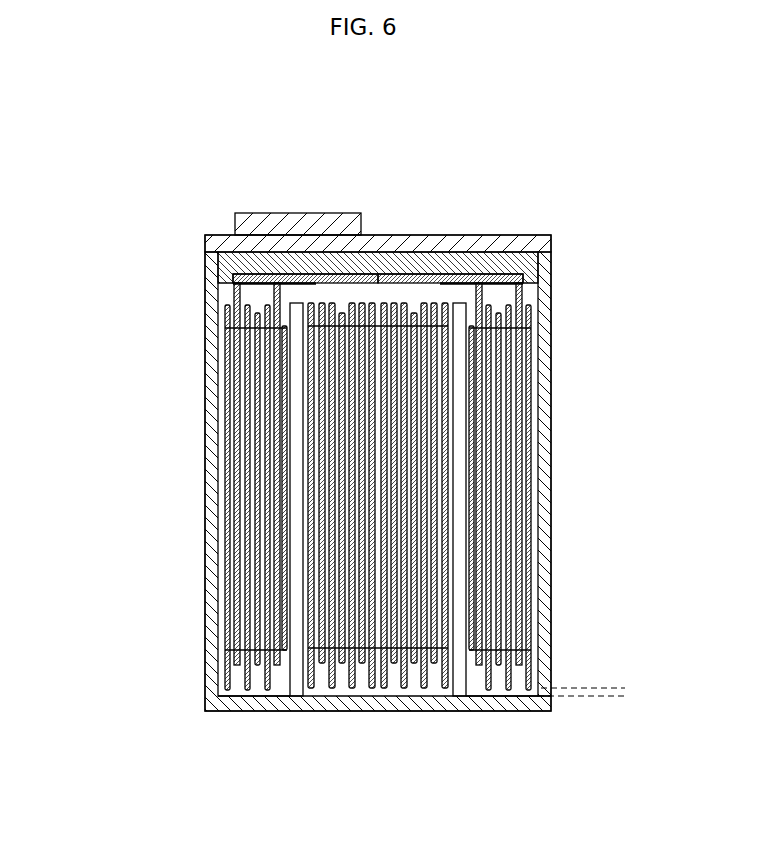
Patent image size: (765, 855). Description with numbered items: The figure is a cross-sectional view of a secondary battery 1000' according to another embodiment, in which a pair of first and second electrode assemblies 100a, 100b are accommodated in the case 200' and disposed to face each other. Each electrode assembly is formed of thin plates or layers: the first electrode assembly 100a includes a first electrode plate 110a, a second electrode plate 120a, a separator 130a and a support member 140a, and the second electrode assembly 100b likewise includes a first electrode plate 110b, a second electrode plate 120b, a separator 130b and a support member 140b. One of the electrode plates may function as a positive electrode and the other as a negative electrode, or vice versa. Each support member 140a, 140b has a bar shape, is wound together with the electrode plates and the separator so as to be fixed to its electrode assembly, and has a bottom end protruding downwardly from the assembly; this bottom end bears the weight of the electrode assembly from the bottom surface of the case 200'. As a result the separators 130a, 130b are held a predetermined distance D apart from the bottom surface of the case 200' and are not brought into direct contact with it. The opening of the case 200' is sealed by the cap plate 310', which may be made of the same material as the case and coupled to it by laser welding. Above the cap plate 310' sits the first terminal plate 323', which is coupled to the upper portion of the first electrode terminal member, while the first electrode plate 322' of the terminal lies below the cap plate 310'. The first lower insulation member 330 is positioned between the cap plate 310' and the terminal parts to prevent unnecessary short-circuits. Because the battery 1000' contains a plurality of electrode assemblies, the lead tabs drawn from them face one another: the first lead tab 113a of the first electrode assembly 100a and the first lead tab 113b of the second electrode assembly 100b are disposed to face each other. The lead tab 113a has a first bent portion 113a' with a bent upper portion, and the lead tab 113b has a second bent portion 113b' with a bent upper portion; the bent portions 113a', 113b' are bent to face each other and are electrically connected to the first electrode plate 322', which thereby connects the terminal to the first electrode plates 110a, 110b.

The secondary battery 1000' is at (312, 422).
The case 200' is at (378, 516).
The cap plate 310' is at (358, 214).
The first terminal plate 323' is at (298, 195).
The first electrode plate 322' is at (323, 261).
The first lower insulation member 330 is at (531, 246).
The first bent portion 113a' is at (237, 283).
The second bent portion 113b' is at (519, 288).
The first lead tab 113a is at (194, 474).
The first lead tab of second electrode assembly 113b is at (563, 474).
The first electrode assembly 100a is at (196, 486).
The second electrode assembly 100b is at (560, 486).
The first electrode plate 110a is at (234, 498).
The first electrode plate 110b is at (507, 498).
The second electrode plate 120a is at (214, 562).
The second electrode plate 120b is at (527, 562).
The separator 130a is at (260, 690).
The separator 130b is at (483, 690).
The support member 140a is at (288, 690).
The support member 140b is at (455, 690).
The predetermined distance D is at (587, 713).